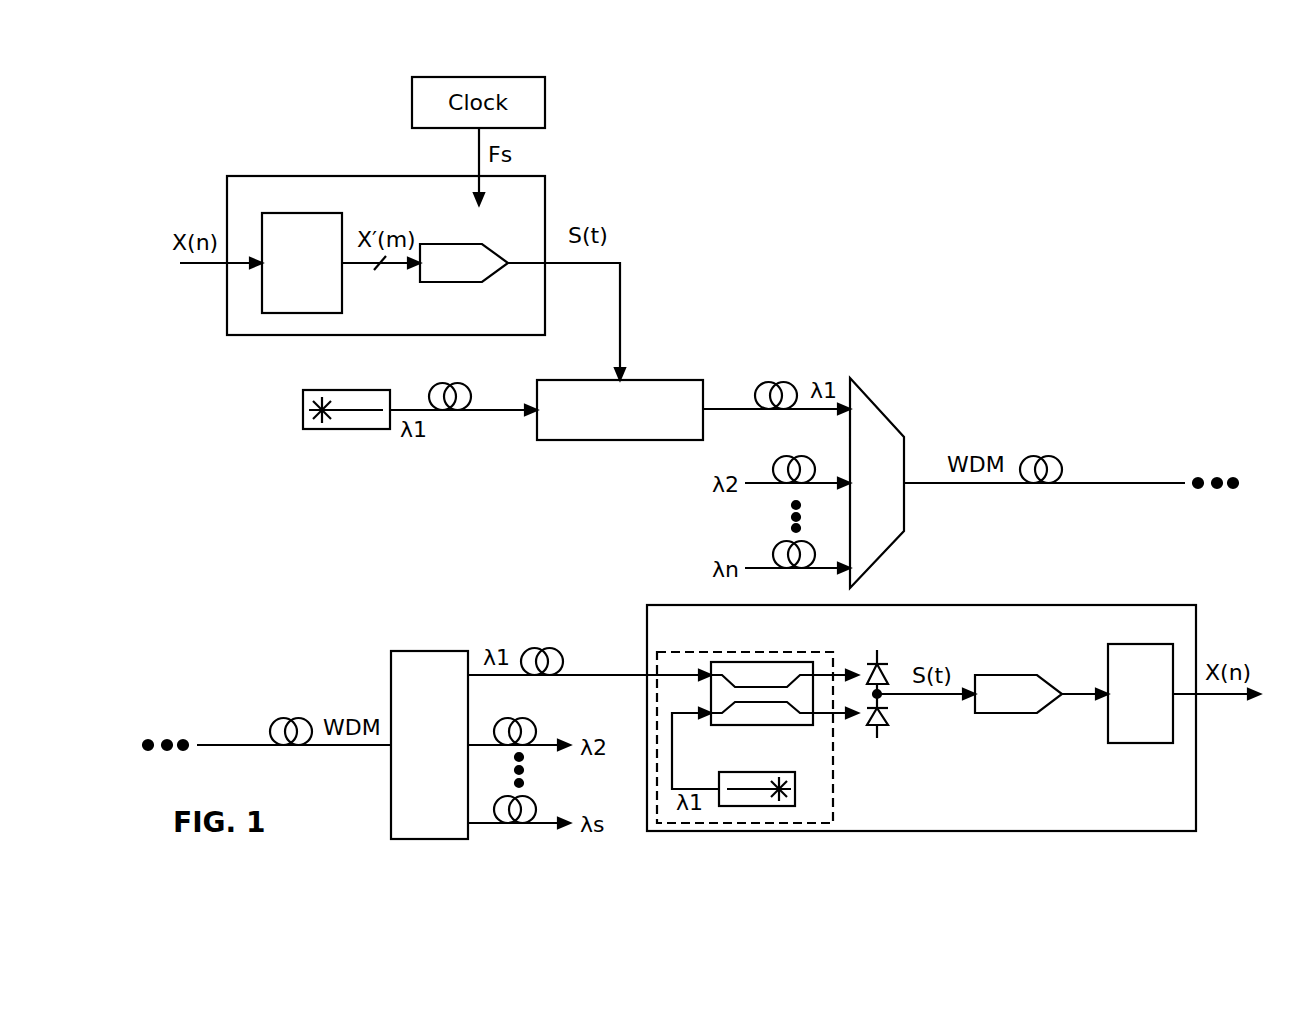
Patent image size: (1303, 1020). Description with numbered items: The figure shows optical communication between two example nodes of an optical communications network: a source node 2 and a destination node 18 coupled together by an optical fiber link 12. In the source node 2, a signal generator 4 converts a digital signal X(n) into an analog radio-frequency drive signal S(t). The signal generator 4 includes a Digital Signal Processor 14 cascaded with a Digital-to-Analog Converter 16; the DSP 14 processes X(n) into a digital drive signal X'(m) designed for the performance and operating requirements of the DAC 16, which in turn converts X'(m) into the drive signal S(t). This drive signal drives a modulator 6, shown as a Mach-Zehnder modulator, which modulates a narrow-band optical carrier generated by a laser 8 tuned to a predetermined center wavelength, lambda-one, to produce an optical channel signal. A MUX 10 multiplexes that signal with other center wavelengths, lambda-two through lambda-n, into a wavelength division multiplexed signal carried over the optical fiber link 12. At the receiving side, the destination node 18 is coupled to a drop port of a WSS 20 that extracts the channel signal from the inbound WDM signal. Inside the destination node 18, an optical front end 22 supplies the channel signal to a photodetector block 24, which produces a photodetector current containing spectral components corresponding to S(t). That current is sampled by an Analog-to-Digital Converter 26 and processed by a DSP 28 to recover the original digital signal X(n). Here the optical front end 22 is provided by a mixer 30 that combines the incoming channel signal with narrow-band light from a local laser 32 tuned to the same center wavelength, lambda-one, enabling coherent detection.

The source node 2 is at (687, 117).
The signal generator 4 is at (380, 176).
The modulator 6 is at (663, 380).
The laser 8 is at (345, 390).
The MUX 10 is at (877, 403).
The optical fiber link 12 is at (1097, 483).
The Digital Signal Processor 14 is at (292, 213).
The Digital-to-Analog Converter 16 is at (470, 243).
The destination node 18 is at (982, 605).
The WSS 20 is at (418, 651).
The optical front end 22 is at (745, 652).
The photodetector block 24 is at (877, 654).
The Analog-to-Digital Converter 26 is at (1002, 675).
The DSP 28 is at (1128, 644).
The mixer 30 is at (763, 725).
The local laser 32 is at (742, 772).